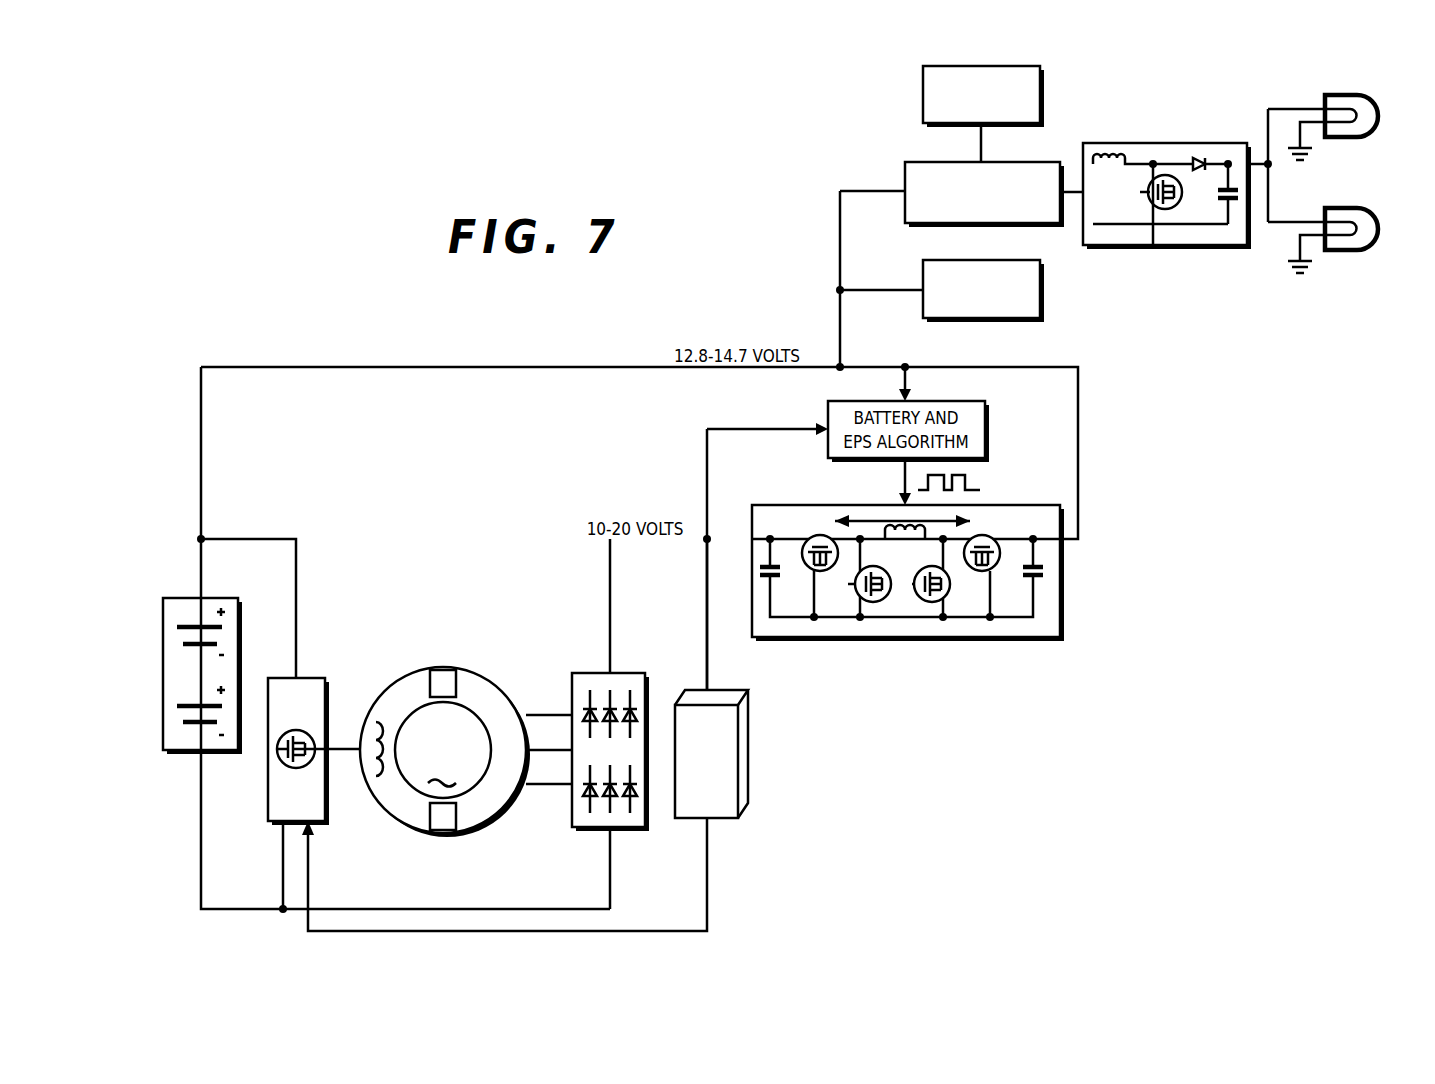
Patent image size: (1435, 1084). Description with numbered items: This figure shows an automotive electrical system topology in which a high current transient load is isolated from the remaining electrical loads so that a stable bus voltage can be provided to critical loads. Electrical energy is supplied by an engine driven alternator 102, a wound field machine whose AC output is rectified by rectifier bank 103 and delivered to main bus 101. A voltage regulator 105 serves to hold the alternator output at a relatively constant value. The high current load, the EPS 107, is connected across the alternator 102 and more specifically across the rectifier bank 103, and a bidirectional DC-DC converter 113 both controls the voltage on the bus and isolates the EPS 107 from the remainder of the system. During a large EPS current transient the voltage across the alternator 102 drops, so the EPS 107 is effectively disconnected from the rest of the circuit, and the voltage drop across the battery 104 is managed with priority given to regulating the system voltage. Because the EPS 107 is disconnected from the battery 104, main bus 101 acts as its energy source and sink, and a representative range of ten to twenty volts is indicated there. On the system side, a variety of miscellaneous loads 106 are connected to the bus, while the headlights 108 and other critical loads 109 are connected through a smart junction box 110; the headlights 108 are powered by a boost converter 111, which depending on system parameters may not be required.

The main bus 101 is at (706, 603).
The alternator 102 is at (443, 834).
The rectifier bank 103 is at (590, 672).
The battery 104 is at (163, 693).
The voltage regulator 105 is at (268, 783).
The miscellaneous loads 106 is at (990, 320).
The EPS 107 is at (742, 745).
The headlights 108 is at (1355, 252).
The other critical loads 109 is at (1043, 104).
The smart junction box 110 is at (980, 225).
The boost converter 111 is at (1168, 143).
The bidirectional DC-DC converter 113 is at (1063, 588).